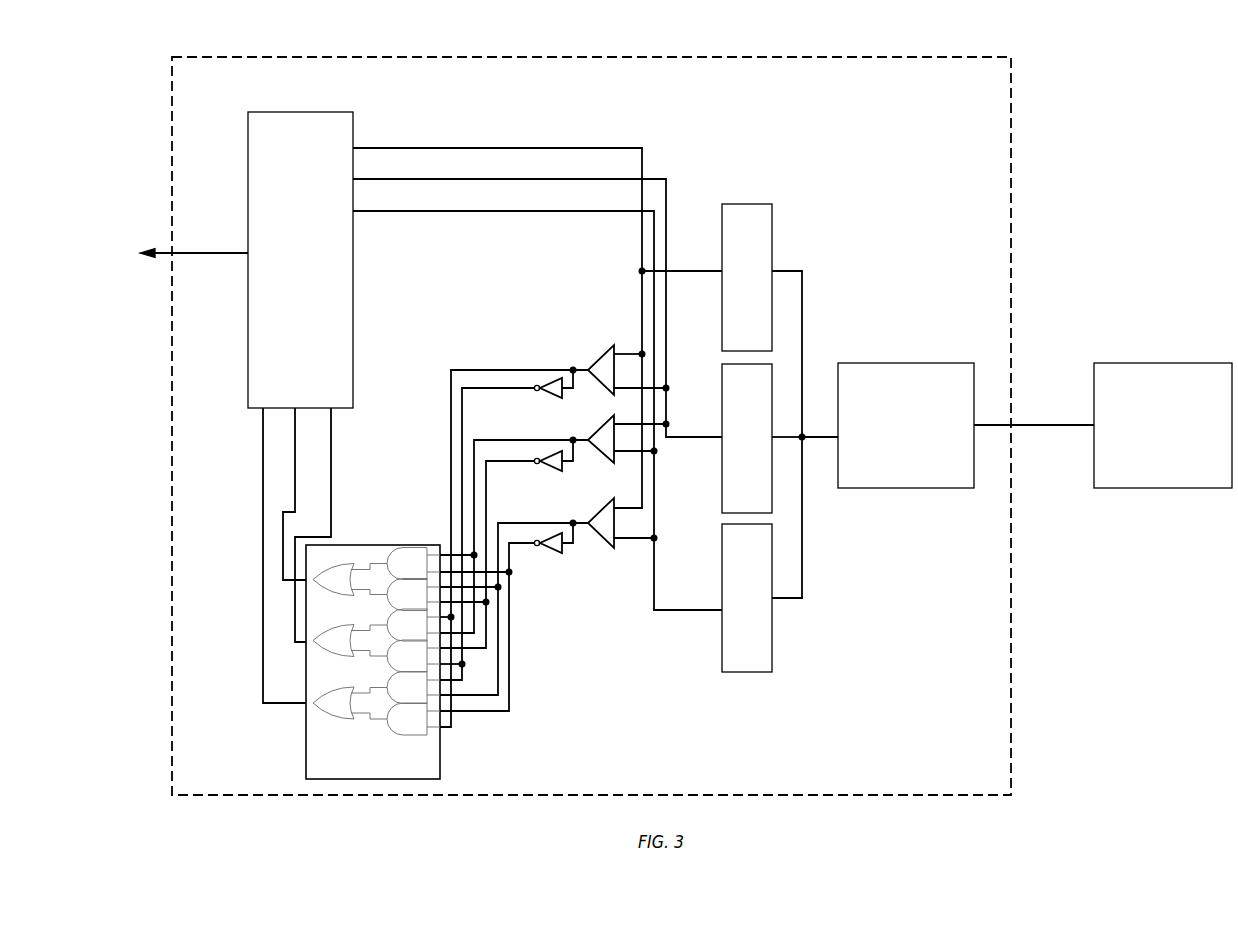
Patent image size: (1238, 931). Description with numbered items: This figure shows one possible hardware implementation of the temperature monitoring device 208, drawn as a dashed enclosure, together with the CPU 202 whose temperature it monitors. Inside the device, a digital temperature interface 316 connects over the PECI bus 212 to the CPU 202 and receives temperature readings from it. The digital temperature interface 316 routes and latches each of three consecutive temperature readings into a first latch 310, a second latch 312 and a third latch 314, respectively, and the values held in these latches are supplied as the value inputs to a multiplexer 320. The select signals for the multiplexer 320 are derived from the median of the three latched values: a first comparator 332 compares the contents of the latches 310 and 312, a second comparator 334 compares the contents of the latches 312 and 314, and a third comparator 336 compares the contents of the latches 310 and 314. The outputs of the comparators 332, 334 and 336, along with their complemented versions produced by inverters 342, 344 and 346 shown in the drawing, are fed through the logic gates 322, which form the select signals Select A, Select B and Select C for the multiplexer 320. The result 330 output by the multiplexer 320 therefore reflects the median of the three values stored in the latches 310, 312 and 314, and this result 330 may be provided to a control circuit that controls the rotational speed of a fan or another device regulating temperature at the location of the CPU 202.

The CPU 202 is at (1163, 425).
The temperature monitoring device 208 is at (591, 426).
The PECI bus 212 is at (1034, 425).
The latch 310 is at (747, 277).
The latch 312 is at (747, 438).
The latch 314 is at (747, 598).
The digital temperature interface 316 is at (906, 425).
The multiplexer 320 is at (300, 260).
The logic gates 322 is at (388, 593).
The result 330 is at (172, 253).
The comparator 332 is at (603, 348).
The comparator 334 is at (602, 427).
The comparator 336 is at (605, 577).
The inverter B =A 342 is at (551, 375).
The inverter C =B 344 is at (552, 468).
The inverter C =A 346 is at (557, 555).